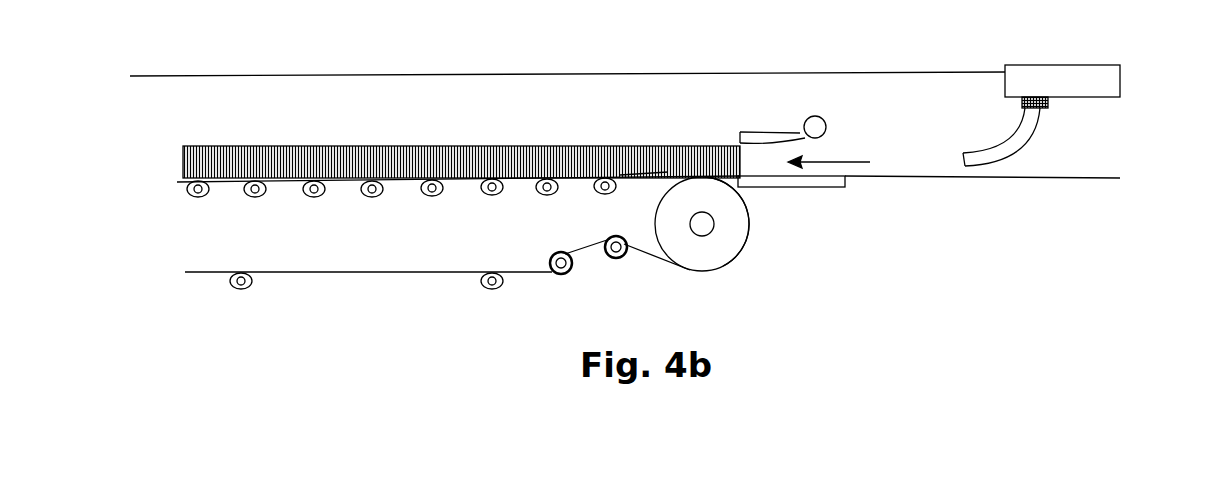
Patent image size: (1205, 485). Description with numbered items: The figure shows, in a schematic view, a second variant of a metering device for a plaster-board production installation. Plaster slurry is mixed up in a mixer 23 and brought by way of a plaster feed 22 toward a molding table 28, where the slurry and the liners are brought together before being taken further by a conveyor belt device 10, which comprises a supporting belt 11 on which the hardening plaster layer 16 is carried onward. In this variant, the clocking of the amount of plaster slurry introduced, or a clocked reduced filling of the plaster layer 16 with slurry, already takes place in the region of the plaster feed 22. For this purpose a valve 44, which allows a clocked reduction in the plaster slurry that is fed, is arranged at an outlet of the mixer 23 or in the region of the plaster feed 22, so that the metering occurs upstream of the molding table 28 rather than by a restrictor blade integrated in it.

The conveyor belt device 10 is at (361, 244).
The supporting belt 11 is at (518, 180).
The plaster layer 16 is at (579, 159).
The plaster feed 22 is at (1020, 140).
The mixer 23 is at (1097, 74).
The molding table 28 is at (812, 187).
The valve 44 is at (1050, 105).